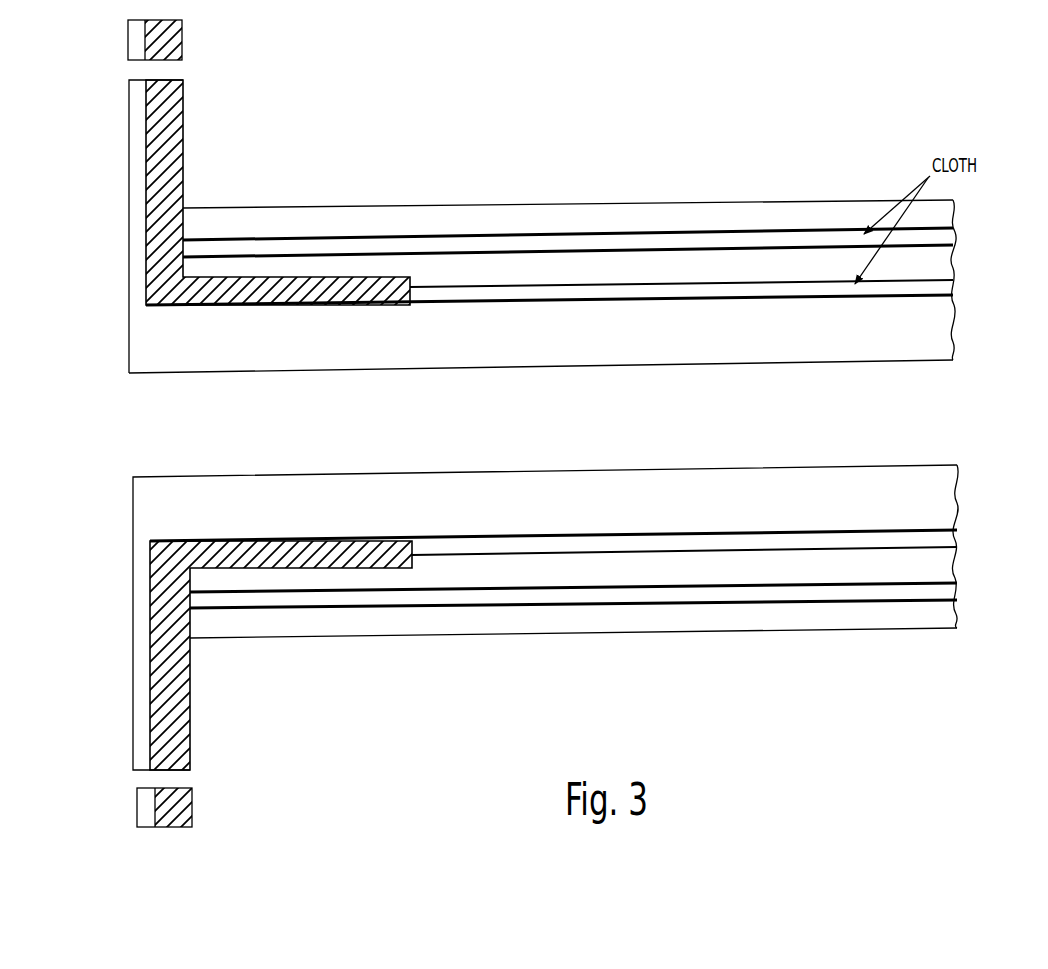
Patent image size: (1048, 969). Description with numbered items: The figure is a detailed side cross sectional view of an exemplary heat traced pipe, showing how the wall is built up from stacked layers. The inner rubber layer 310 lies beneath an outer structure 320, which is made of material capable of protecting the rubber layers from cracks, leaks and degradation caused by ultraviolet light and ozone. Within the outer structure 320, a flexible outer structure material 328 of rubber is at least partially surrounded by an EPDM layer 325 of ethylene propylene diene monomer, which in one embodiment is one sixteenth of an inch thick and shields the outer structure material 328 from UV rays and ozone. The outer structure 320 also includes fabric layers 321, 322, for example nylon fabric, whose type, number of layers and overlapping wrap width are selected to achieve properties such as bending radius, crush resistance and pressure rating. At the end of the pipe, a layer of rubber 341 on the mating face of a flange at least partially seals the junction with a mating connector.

The layer of rubber 341 is at (129, 118).
The EPDM layer 325 is at (380, 221).
The fabric layer 322 is at (425, 246).
The outer structure material 328 is at (477, 270).
The fabric layer 321 is at (528, 295).
The outer structure 320 is at (960, 200).
The rubber layer 310 is at (960, 297).